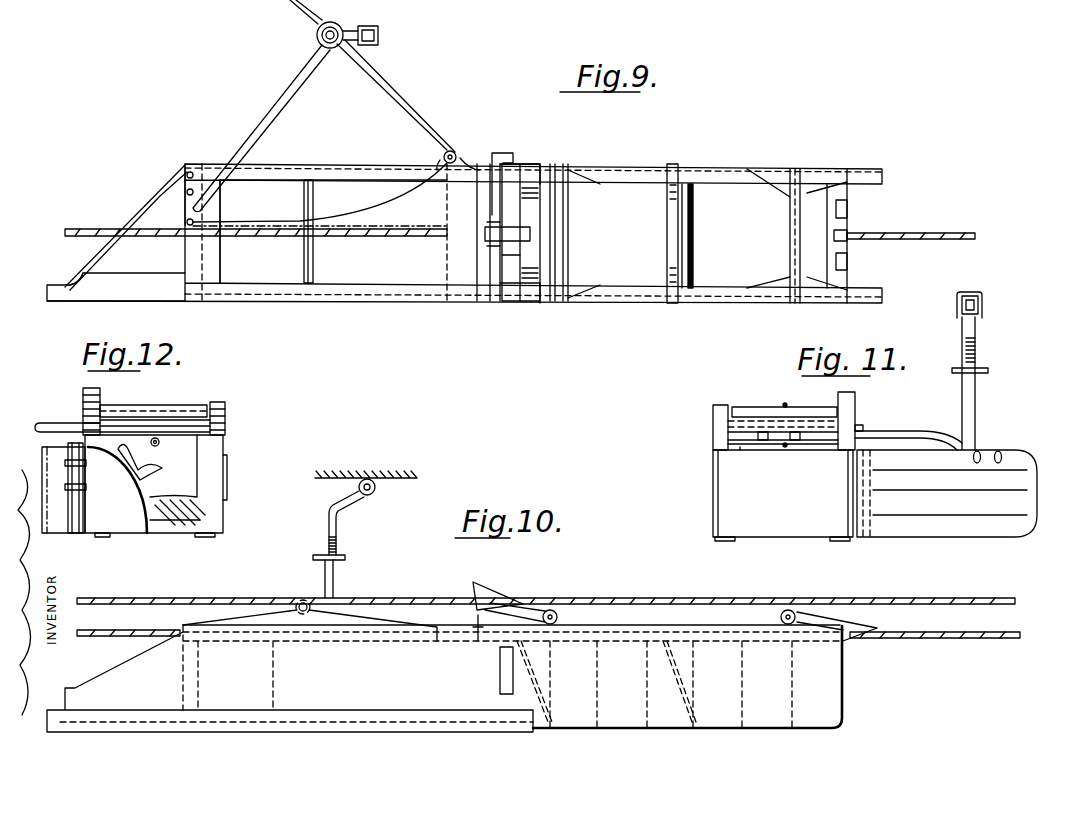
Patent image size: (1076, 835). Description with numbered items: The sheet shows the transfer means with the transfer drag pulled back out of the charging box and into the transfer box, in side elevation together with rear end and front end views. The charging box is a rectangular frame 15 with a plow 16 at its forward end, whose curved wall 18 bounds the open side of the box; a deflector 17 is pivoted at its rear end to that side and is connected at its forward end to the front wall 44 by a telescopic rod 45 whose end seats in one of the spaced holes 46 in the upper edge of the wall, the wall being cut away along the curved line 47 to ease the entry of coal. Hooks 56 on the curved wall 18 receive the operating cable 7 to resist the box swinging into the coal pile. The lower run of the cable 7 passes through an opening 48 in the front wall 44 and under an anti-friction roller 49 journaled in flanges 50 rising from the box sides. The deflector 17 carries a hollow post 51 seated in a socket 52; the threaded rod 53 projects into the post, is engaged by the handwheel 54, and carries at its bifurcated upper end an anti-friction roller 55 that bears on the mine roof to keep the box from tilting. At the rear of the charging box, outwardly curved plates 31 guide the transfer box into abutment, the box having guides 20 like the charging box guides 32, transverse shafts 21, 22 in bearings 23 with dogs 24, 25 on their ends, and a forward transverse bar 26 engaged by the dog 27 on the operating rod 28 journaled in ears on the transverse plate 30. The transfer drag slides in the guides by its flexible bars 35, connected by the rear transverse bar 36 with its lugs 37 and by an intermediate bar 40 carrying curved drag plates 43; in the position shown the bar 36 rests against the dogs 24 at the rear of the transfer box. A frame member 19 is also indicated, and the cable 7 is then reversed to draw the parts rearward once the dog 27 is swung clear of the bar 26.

In FIG. 9, the operating cable 7 is at (918, 233).
In FIG. 10, the operating cable 7 is at (125, 631).
In FIG. 12, the operating cable 7 is at (155, 402).
In FIG. 9, the rectangular frame 15 is at (260, 288).
In FIG. 9, the plow 16 is at (116, 287).
In FIG. 10, the plow 16 is at (443, 678).
In FIG. 9, the deflector 17 is at (302, 12).
In FIG. 11, the deflector 17 is at (1030, 480).
In FIG. 12, the deflector 17 is at (60, 523).
In FIG. 9, the curved wall 18 is at (92, 263).
In FIG. 12, the curved wall 18 is at (185, 525).
In FIG. 10, the frame section 19 is at (687, 677).
In FIG. 9, the guides 20 is at (416, 298).
In FIG. 9, the transverse shaft 21 is at (797, 232).
In FIG. 10, the transverse shaft 21 is at (790, 610).
In FIG. 9, the transverse shaft 22 is at (556, 232).
In FIG. 10, the transverse shaft 22 is at (553, 610).
In FIG. 9, the bearings 23 is at (783, 278).
In FIG. 9, the dogs 24 is at (866, 176).
In FIG. 10, the dogs 24 is at (843, 622).
In FIG. 11, the dogs 24 is at (712, 452).
In FIG. 9, the dogs 25 is at (530, 178).
In FIG. 10, the dogs 25 is at (490, 598).
In FIG. 9, the transverse bar 26 is at (532, 256).
In FIG. 9, the dog 27 is at (487, 224).
In FIG. 9, the operating rod 28 is at (491, 199).
In FIG. 10, the operating rod 28 is at (474, 614).
In FIG. 11, the operating rod 28 is at (866, 428).
In FIG. 9, the transverse plate 30 is at (453, 265).
In FIG. 9, the curved plates 31 is at (503, 158).
In FIG. 10, the curved plates 31 is at (500, 673).
In FIG. 12, the curved plates 31 is at (228, 476).
In FIG. 9, the guides 32 is at (408, 105).
In FIG. 11, the bars 35 is at (712, 442).
In FIG. 9, the transverse bar 36 is at (850, 240).
In FIG. 11, the transverse bar 36 is at (802, 453).
In FIG. 9, the lugs 37 is at (848, 205).
In FIG. 11, the lugs 37 is at (758, 450).
In FIG. 9, the transverse bar 40 is at (672, 250).
In FIG. 9, the curved drag plates 43 is at (694, 232).
In FIG. 10, the curved drag plates 43 is at (532, 682).
In FIG. 12, the front wall 44 is at (185, 462).
In FIG. 9, the rod 45 is at (268, 95).
In FIG. 11, the rod 45 is at (915, 436).
In FIG. 12, the rod 45 is at (45, 425).
In FIG. 9, the spaced holes 46 is at (186, 190).
In FIG. 12, the curved line 47 is at (135, 475).
In FIG. 12, the opening 48 is at (160, 445).
In FIG. 9, the anti-friction roller 49 is at (315, 200).
In FIG. 10, the anti-friction roller 49 is at (302, 603).
In FIG. 11, the anti-friction roller 49 is at (758, 407).
In FIG. 12, the anti-friction roller 49 is at (186, 405).
In FIG. 10, the flanges 50 is at (275, 612).
In FIG. 10, the hollow post 51 is at (334, 572).
In FIG. 11, the hollow post 51 is at (975, 405).
In FIG. 11, the socket 52 is at (962, 459).
In FIG. 10, the rod 53 is at (337, 526).
In FIG. 11, the rod 53 is at (978, 348).
In FIG. 9, the handwheel 54 is at (330, 49).
In FIG. 10, the handwheel 54 is at (346, 557).
In FIG. 11, the handwheel 54 is at (988, 370).
In FIG. 9, the anti-friction roller 55 is at (380, 37).
In FIG. 10, the anti-friction roller 55 is at (376, 488).
In FIG. 11, the anti-friction roller 55 is at (972, 295).
In FIG. 9, the hooks 56 is at (158, 194).
In FIG. 12, the hooks 56 is at (125, 455).